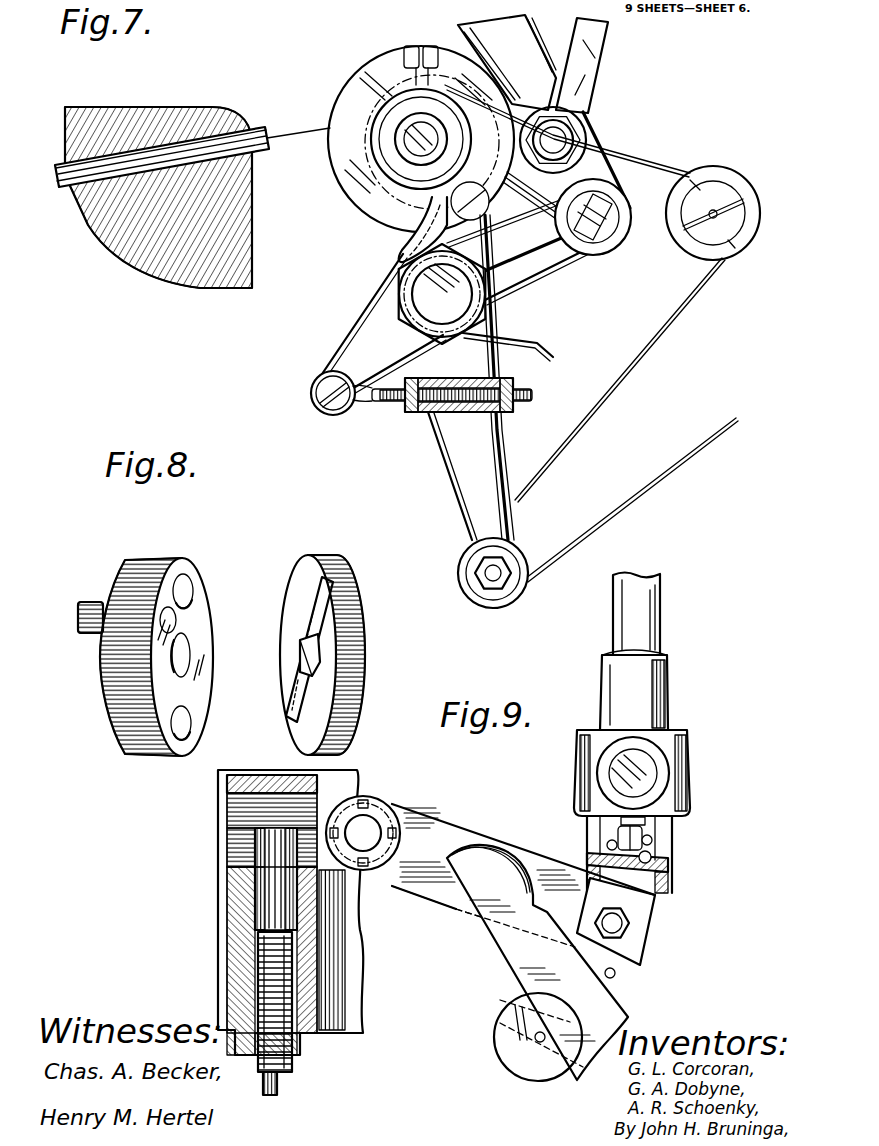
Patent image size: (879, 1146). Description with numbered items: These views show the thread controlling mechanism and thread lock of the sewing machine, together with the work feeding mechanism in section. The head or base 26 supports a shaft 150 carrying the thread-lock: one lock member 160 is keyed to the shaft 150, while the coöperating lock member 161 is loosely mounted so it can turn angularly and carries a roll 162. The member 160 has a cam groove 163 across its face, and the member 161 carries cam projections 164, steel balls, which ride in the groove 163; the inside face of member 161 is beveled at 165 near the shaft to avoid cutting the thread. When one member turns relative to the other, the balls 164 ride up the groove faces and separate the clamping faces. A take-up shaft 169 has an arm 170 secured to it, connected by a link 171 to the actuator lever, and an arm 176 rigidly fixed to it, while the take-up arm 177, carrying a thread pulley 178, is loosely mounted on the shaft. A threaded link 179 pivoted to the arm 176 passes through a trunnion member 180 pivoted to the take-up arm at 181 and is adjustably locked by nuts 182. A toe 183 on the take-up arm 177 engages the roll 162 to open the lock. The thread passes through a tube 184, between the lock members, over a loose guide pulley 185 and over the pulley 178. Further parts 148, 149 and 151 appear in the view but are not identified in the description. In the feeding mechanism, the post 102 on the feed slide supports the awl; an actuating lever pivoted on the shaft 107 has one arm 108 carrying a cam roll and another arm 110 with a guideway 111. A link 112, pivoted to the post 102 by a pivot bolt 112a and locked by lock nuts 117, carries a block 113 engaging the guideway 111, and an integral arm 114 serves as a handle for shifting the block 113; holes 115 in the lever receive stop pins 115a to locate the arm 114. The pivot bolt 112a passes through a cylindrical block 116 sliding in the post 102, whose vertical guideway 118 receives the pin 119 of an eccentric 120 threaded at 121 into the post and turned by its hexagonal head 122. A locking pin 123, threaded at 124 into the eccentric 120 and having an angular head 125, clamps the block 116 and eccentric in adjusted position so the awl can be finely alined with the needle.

In FIG. 7, the head or base 26 is at (208, 270).
In FIG. 7, the tube 184 is at (258, 132).
In FIG. 7, the thread-lock member 161 is at (364, 81).
In FIG. 8, the thread-lock member 161 is at (160, 566).
In FIG. 7, the shaft 150 is at (410, 153).
In FIG. 7, the link 171 is at (507, 62).
In FIG. 7, the bar 148 is at (594, 56).
In FIG. 7, the nut 149 is at (590, 125).
In FIG. 7, the loose guide pulley 185 is at (735, 238).
In FIG. 7, the arm 170 is at (539, 242).
In FIG. 7, the roll 162 is at (482, 210).
In FIG. 8, the roll 162 is at (100, 601).
In FIG. 7, the toe 183 is at (430, 211).
In FIG. 7, the take-up shaft 169 is at (442, 294).
In FIG. 7, the arm 176 is at (382, 324).
In FIG. 7, the take-up arm 177 is at (471, 377).
In FIG. 7, the thread roll or pulley 178 is at (512, 577).
In FIG. 7, the lever 151 is at (558, 356).
In FIG. 7, the threaded link 179 is at (381, 406).
In FIG. 7, the trunnion member 180 is at (462, 362).
In FIG. 7, the pivot 181 is at (488, 412).
In FIG. 7, the nuts 182 is at (414, 412).
In FIG. 8, the cam projections 164 is at (193, 588).
In FIG. 8, the bevel 165 is at (193, 655).
In FIG. 8, the thread-lock member 160 is at (355, 652).
In FIG. 8, the cam groove 163 is at (333, 588).
In FIG. 9, the arm of actuating lever 108 is at (634, 652).
In FIG. 9, the shaft 107 is at (632, 773).
In FIG. 9, the guideway 111 is at (669, 882).
In FIG. 9, the holes 115 is at (606, 823).
In FIG. 9, the block 113 is at (655, 920).
In FIG. 9, the post 102 is at (312, 949).
In FIG. 9, the cylindrical block 116 is at (297, 828).
In FIG. 9, the vertical guideway 118 is at (330, 796).
In FIG. 9, the pin 119 is at (256, 842).
In FIG. 9, the locking pin 123 is at (276, 882).
In FIG. 9, the eccentric 120 is at (322, 912).
In FIG. 9, the threaded portion 121 is at (305, 1004).
In FIG. 9, the hexagonal head 122 is at (302, 1050).
In FIG. 9, the thread 124 is at (284, 1066).
In FIG. 9, the angular head 125 is at (279, 1090).
In FIG. 9, the link 112 is at (466, 835).
In FIG. 9, the pivot bolt 112a is at (464, 834).
In FIG. 9, the lock nuts 117 is at (366, 830).
In FIG. 9, the arm 114 is at (537, 962).
In FIG. 9, the arm of actuating lever 110 is at (523, 1062).
In FIG. 9, the stop pins 115a is at (537, 1040).